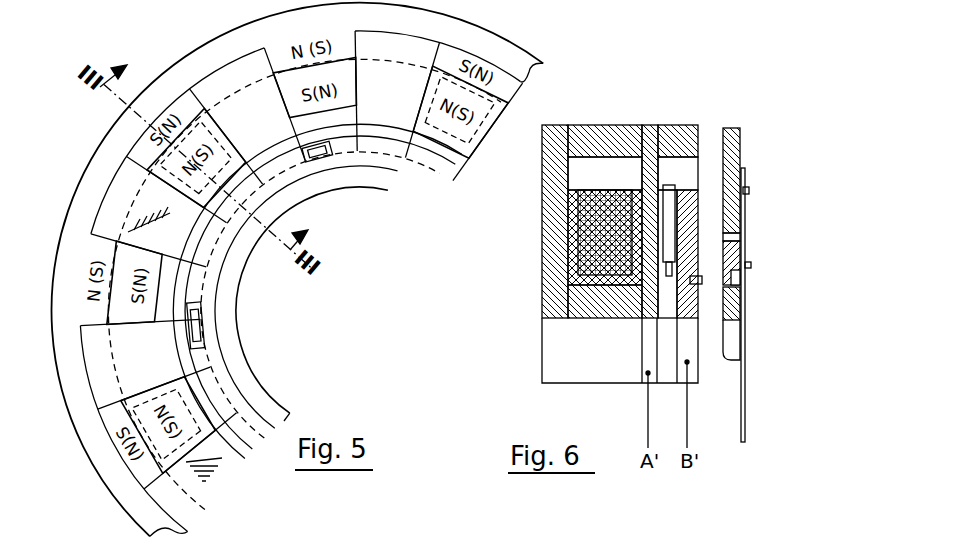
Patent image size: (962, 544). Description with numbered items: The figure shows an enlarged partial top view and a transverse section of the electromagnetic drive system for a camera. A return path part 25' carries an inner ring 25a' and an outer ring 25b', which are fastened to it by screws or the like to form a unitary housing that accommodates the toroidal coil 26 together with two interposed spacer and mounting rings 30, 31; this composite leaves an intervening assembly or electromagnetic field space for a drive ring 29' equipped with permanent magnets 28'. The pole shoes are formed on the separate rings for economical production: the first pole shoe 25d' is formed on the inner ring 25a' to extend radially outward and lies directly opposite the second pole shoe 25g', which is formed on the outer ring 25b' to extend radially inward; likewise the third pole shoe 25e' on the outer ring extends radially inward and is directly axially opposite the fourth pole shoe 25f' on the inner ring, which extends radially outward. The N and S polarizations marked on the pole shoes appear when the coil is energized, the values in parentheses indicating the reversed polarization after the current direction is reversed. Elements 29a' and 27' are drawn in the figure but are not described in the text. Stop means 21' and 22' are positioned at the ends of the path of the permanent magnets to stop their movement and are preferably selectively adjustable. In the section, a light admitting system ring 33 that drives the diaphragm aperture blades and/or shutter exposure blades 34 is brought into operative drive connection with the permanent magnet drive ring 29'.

In FIG. 5, the outer ring 25b' is at (328, 270).
In FIG. 5, the inner ring 25a' is at (306, 297).
In FIG. 5, the permanent magnets 28' is at (293, 268).
In FIG. 6, the permanent magnets 28' is at (733, 223).
In FIG. 5, the drive ring 29' is at (304, 284).
In FIG. 6, the drive ring 29' is at (735, 236).
In FIG. 5, the first pole shoe 25d' is at (313, 291).
In FIG. 6, the first pole shoe 25d' is at (584, 352).
In FIG. 5, the magnet piece 29a' is at (281, 250).
In FIG. 6, the magnet piece 29a' is at (755, 296).
In FIG. 5, the slot between stator segments 27' is at (301, 260).
In FIG. 6, the slot between stator segments 27' is at (563, 232).
In FIG. 5, the stop means 22' is at (101, 213).
In FIG. 5, the stop means 21' is at (218, 490).
In FIG. 5, the second pole shoe 25g' is at (64, 385).
In FIG. 6, the second pole shoe 25g' is at (701, 134).
In FIG. 5, the third pole shoe 25e' is at (80, 496).
In FIG. 6, the third pole shoe 25e' is at (636, 198).
In FIG. 5, the fourth pole shoe 25f' is at (261, 469).
In FIG. 6, the fourth pole shoe 25f' is at (778, 282).
In FIG. 6, the return path part 25' is at (556, 239).
In FIG. 6, the coil 26 is at (600, 243).
In FIG. 6, the spacer and mounting ring 30 is at (672, 138).
In FIG. 6, the light admitting system ring 33 is at (762, 260).
In FIG. 6, the spacer and mounting ring 31 is at (680, 327).
In FIG. 6, the diaphragm aperture blades and/or shutter exposure blades 34 is at (743, 352).